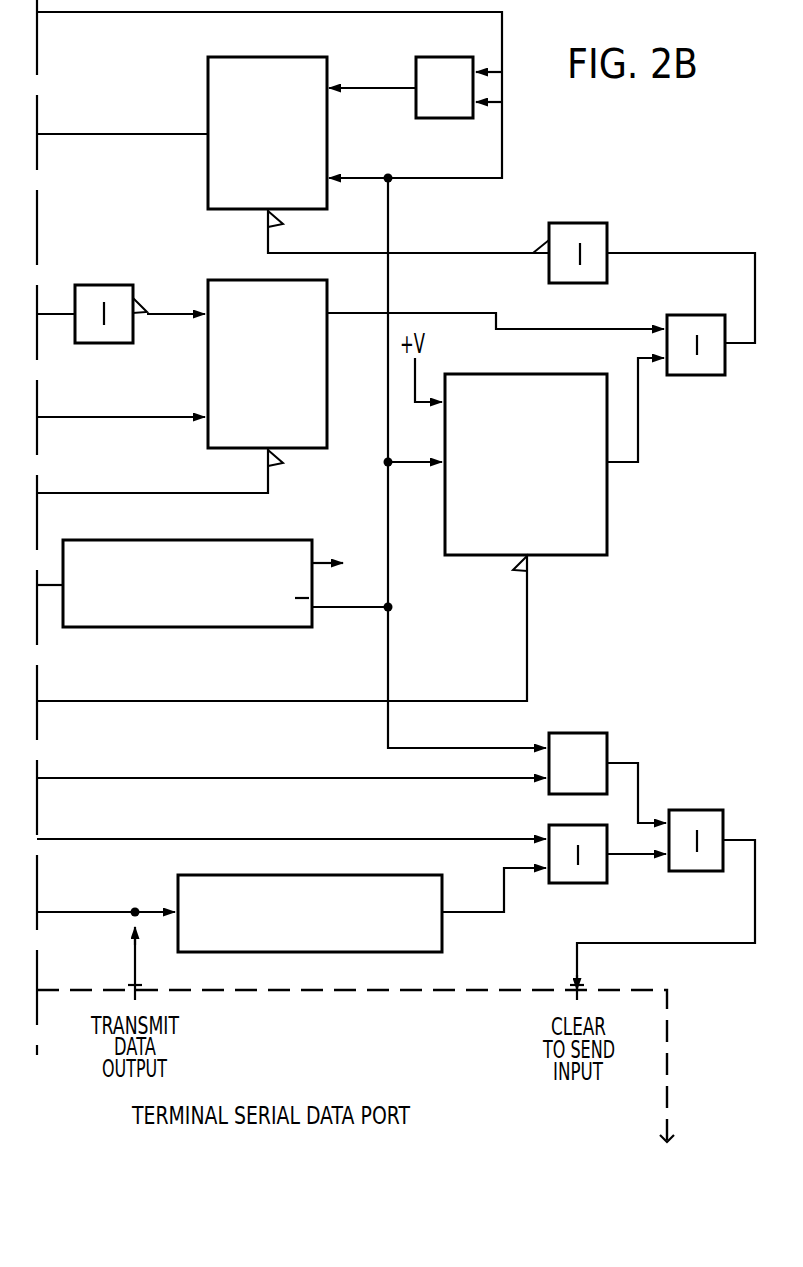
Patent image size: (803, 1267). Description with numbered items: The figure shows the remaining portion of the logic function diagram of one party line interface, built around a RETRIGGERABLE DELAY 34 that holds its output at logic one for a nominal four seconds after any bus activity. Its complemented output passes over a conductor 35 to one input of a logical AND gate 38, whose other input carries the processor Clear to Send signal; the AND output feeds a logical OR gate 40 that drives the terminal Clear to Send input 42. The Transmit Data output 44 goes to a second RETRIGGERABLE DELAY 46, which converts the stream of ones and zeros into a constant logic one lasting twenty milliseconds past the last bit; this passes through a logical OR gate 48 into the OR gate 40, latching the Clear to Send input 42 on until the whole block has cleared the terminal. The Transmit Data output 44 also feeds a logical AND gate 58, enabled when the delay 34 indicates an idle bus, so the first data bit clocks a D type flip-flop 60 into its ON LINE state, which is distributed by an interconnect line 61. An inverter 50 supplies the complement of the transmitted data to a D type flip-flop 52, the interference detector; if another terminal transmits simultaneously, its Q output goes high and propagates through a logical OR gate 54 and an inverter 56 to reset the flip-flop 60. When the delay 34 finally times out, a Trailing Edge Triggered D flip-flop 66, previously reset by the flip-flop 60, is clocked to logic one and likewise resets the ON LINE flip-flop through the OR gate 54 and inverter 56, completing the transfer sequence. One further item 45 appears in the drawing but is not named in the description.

The RETRIGGERABLE DELAY 34 is at (163, 620).
The conductor 35 is at (343, 608).
The logical AND gate 38 is at (569, 736).
The logical OR gate 40 is at (680, 815).
The terminal Clear to Send input 42 is at (575, 1000).
The Transmit Data output 44 is at (145, 992).
The transmit data line 45 is at (133, 958).
The RETRIGGERABLE DELAY 46 is at (187, 882).
The logical OR gate 48 is at (597, 875).
The inverter 50 is at (93, 292).
The D type flip-flop 52 is at (229, 292).
The logical OR gate 54 is at (690, 325).
The inverter 56 is at (573, 232).
The logical AND gate 58 is at (421, 65).
The D type flip-flop 60 is at (213, 69).
The interconnect line 61 is at (177, 133).
The Trailing Edge Triggered D flip-flop 66 is at (597, 520).